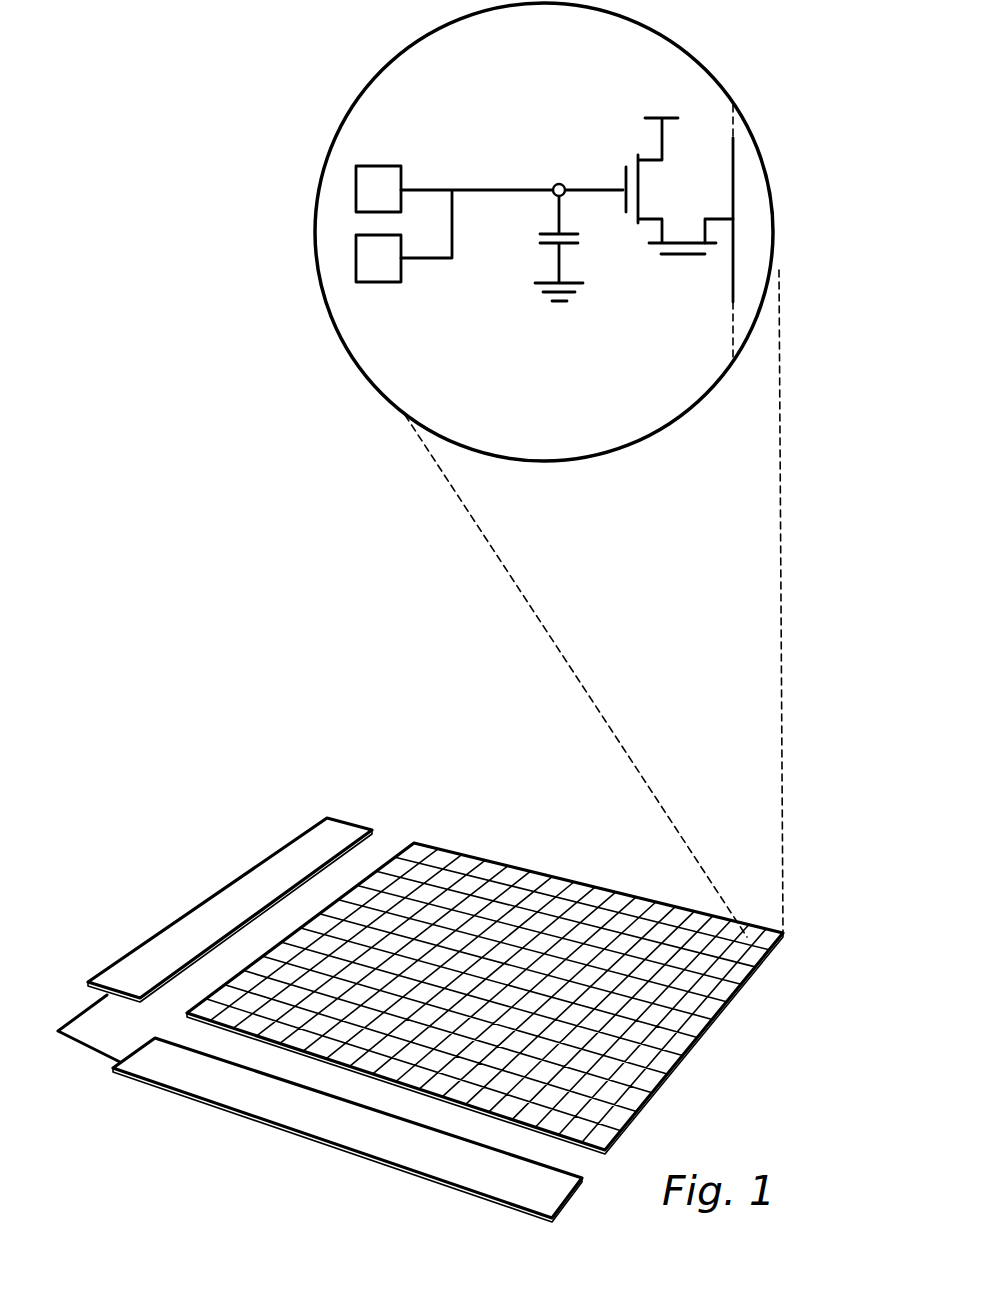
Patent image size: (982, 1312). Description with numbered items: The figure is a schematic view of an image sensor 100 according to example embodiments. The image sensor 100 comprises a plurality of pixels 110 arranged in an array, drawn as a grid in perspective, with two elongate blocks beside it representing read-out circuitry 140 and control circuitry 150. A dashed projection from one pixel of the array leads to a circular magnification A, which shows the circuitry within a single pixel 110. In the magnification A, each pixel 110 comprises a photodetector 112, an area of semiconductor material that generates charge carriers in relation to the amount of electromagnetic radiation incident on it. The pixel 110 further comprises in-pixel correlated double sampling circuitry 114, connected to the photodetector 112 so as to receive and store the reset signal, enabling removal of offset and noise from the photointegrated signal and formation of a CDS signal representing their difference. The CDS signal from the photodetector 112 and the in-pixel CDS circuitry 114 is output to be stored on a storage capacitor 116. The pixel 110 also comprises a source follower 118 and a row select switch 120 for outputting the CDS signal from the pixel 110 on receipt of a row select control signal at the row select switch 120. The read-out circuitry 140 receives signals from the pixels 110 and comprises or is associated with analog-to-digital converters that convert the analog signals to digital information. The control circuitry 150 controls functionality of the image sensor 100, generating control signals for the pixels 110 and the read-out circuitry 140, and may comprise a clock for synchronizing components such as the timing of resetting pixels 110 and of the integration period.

The image sensor 100 is at (440, 598).
The pixel 110 is at (418, 848).
The photodetector 112 is at (368, 189).
The in-pixel correlated double sampling (CDS) circuitry 114 is at (367, 272).
The storage capacitor 116 is at (540, 243).
The source follower 118 is at (640, 188).
The row select switch 120 is at (678, 243).
The read-out circuitry 140 is at (453, 1168).
The control circuitry 150 is at (202, 922).
The magnification A is at (364, 90).